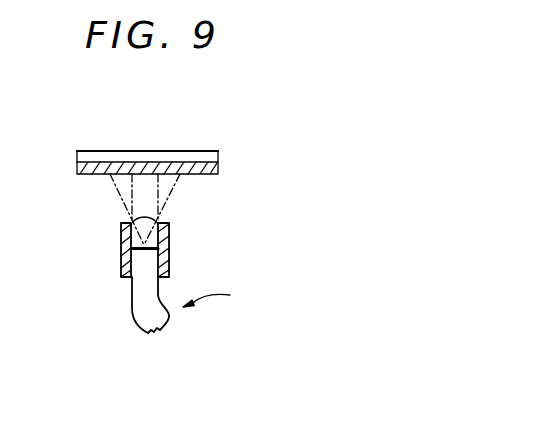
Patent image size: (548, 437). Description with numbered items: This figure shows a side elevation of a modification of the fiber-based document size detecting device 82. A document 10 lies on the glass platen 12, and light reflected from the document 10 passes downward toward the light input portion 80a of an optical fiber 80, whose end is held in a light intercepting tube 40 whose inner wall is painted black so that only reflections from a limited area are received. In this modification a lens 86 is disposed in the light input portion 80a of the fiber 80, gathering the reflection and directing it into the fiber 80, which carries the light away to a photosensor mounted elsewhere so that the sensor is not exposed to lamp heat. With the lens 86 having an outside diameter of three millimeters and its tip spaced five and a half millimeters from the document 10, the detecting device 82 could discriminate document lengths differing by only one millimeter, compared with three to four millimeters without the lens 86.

The document 10 is at (132, 151).
The glass platen 12 is at (203, 165).
The light intercepting tube 40 is at (170, 267).
The lens 86 is at (146, 218).
The light input portion 80a is at (147, 258).
The optical fiber 80 is at (132, 302).
The detecting device 82 is at (224, 302).